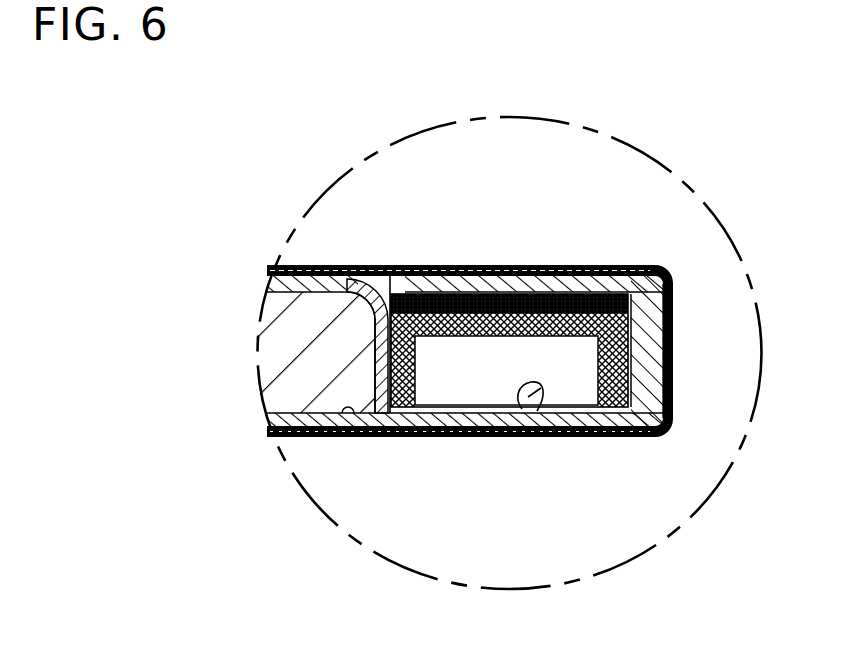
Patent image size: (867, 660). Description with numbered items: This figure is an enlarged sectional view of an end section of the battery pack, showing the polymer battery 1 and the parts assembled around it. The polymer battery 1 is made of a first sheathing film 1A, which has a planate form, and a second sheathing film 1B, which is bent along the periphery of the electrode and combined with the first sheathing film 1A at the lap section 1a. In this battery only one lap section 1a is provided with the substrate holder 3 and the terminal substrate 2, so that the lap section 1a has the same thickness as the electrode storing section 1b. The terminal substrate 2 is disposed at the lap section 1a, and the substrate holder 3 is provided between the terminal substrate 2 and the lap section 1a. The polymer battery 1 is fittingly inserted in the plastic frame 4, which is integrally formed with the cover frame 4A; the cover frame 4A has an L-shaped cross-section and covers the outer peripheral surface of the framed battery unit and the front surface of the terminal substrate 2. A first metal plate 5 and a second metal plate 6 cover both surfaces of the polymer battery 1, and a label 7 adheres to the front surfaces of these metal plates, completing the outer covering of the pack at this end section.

The polymer battery 1 is at (237, 365).
The first sheathing film 1A is at (345, 437).
The second sheathing film 1B is at (303, 267).
The lap section 1a is at (533, 437).
The electrode storing section 1b is at (390, 267).
The terminal substrate 2 is at (590, 267).
The substrate holder 3 is at (672, 397).
The plastic frame 4 is at (648, 335).
The cover frame 4A is at (437, 292).
The first metal plate 5 is at (542, 267).
The second metal plate 6 is at (342, 267).
The label 7 is at (460, 267).